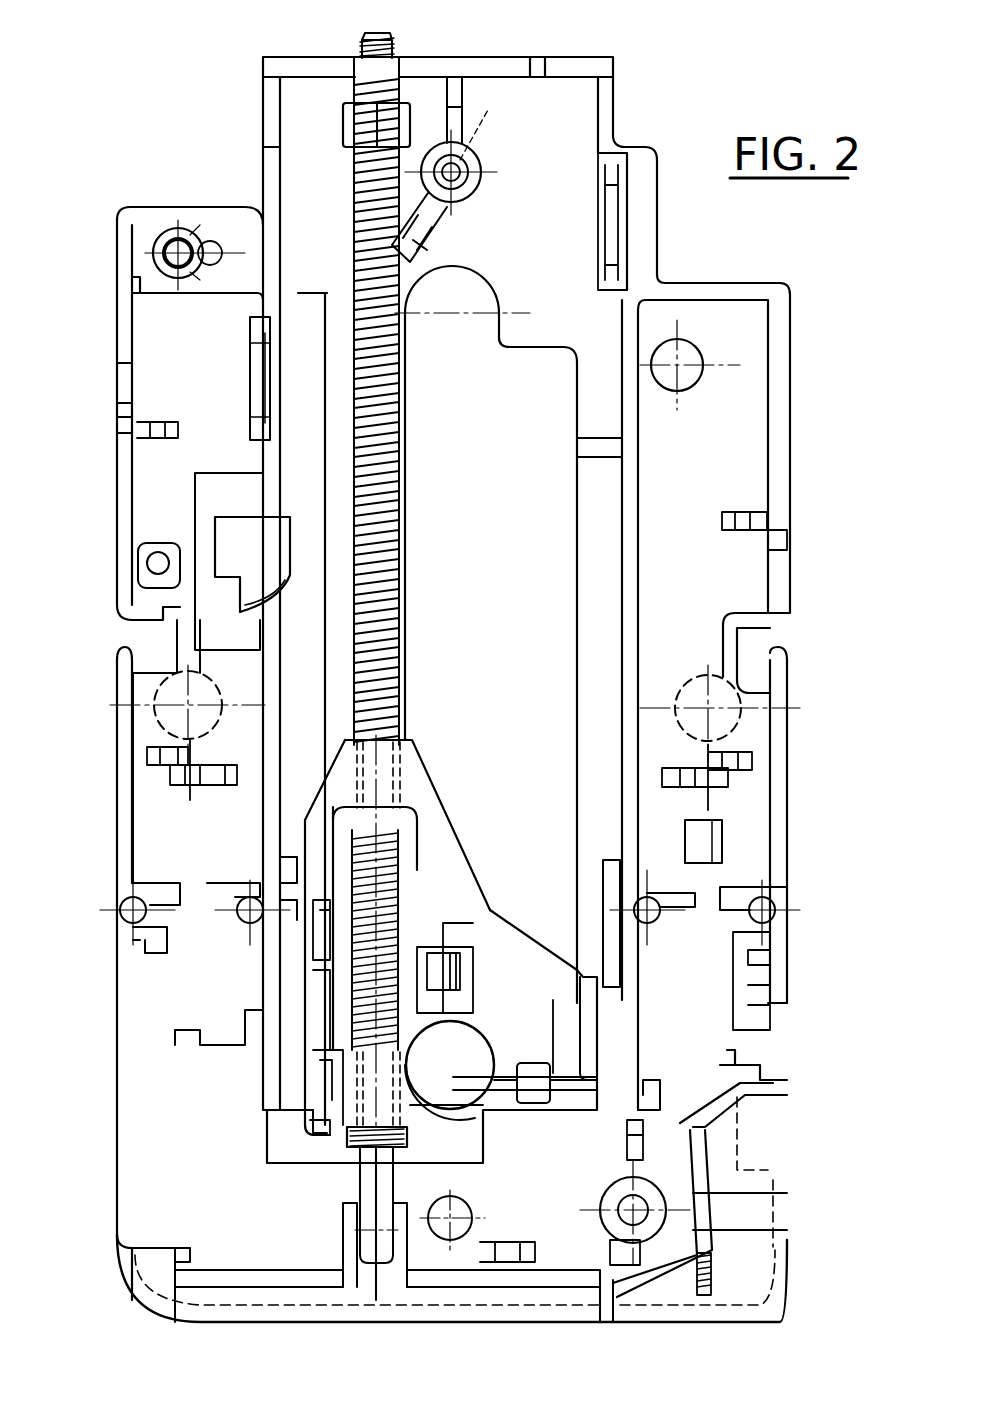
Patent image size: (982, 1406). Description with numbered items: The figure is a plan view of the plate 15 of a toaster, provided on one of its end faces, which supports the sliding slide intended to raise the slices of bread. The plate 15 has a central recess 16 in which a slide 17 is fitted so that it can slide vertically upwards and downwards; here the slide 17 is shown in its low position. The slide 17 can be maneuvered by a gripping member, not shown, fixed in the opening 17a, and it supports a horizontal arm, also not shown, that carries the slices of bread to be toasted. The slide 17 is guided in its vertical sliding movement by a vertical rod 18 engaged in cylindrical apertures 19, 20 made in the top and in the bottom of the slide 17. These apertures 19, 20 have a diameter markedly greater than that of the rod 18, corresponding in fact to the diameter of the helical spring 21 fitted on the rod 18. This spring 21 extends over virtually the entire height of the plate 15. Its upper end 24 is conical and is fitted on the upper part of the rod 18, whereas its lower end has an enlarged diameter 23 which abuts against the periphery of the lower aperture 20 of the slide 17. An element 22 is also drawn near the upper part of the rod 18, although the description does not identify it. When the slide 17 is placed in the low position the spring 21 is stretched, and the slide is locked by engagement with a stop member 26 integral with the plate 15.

The plate 15 is at (142, 820).
The central recess 16 is at (540, 628).
The slide 17 is at (445, 865).
The opening 17a is at (487, 1062).
The vertical rod 18 is at (395, 1183).
The cylindrical aperture 19 is at (400, 773).
The lower aperture 20 is at (313, 1133).
The helical spring 21 is at (402, 533).
The upper nut 22 is at (363, 122).
The enlarged diameter lower end 23 is at (343, 1148).
The upper end 24 is at (404, 40).
The stop member 26 is at (230, 545).